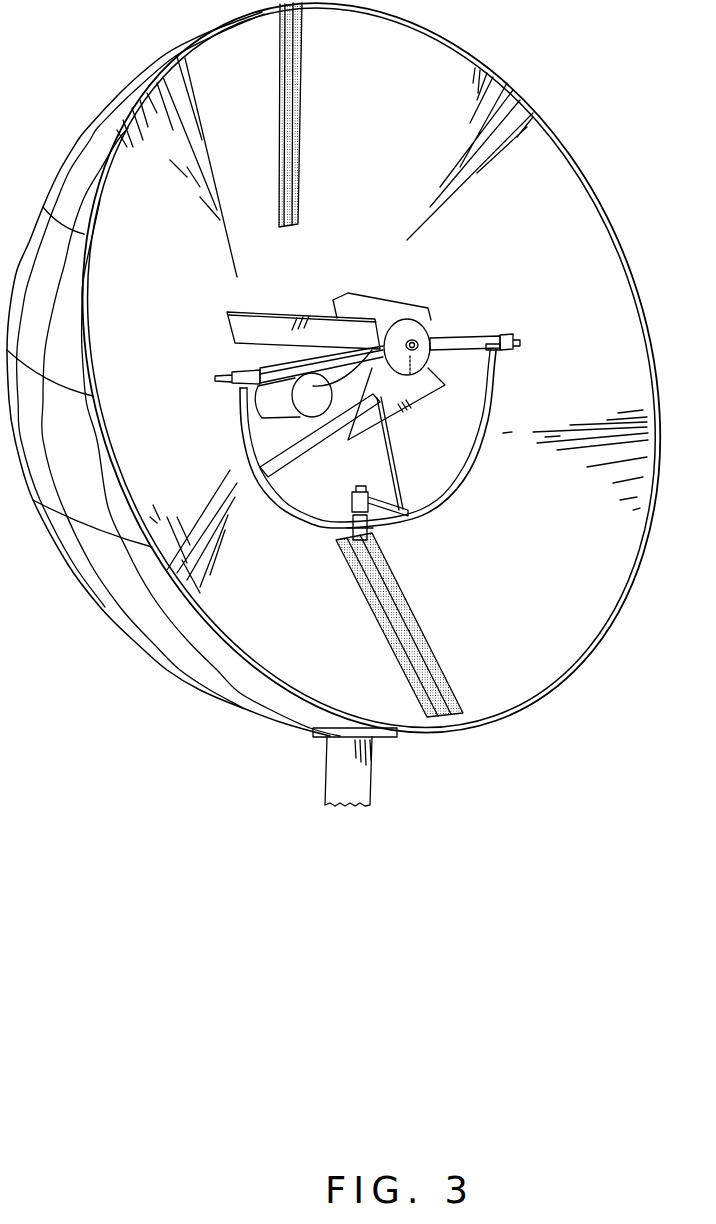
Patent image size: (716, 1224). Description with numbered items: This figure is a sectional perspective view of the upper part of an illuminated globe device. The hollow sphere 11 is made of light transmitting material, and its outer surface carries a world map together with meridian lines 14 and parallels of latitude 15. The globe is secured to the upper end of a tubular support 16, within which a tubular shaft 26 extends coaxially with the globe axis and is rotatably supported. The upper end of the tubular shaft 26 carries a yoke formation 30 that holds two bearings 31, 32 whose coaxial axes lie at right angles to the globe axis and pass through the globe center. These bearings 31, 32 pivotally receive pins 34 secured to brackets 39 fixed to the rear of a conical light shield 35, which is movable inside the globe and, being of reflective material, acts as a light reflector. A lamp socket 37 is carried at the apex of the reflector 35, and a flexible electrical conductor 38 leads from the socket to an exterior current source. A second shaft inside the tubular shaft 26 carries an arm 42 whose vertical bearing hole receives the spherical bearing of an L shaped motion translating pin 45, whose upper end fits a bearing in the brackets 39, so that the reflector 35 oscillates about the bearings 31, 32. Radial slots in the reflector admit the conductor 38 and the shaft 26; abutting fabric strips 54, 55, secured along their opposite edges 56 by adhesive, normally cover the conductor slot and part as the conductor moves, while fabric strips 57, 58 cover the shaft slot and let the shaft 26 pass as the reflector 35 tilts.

The hollow sphere 11 is at (155, 660).
The meridian lines 14 is at (77, 460).
The parallels of latitude 15 is at (57, 224).
The tubular support 16 is at (325, 775).
The tubular shaft 26 is at (347, 533).
The yoke formation 30 is at (483, 443).
The bearing 31 is at (240, 370).
The bearing 32 is at (500, 342).
The pins 34 is at (513, 347).
The conical light shield 35 is at (557, 207).
The lamp socket 37 is at (270, 407).
The flexible electrical conductor 38 is at (396, 318).
The brackets 39 is at (465, 342).
The arm 42 is at (381, 495).
The L shaped motion translating pin 45 is at (398, 478).
The fabric strip 54 is at (281, 123).
The fabric strip 55 is at (303, 127).
The edges 56 is at (323, 68).
The fabric strip 57 is at (397, 647).
The fabric strip 58 is at (428, 637).